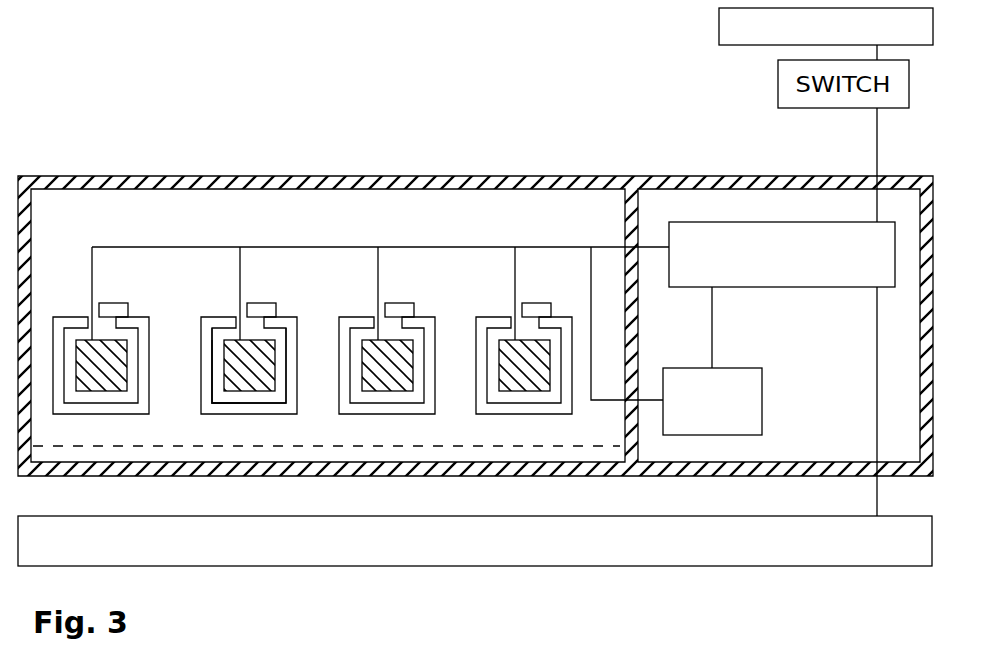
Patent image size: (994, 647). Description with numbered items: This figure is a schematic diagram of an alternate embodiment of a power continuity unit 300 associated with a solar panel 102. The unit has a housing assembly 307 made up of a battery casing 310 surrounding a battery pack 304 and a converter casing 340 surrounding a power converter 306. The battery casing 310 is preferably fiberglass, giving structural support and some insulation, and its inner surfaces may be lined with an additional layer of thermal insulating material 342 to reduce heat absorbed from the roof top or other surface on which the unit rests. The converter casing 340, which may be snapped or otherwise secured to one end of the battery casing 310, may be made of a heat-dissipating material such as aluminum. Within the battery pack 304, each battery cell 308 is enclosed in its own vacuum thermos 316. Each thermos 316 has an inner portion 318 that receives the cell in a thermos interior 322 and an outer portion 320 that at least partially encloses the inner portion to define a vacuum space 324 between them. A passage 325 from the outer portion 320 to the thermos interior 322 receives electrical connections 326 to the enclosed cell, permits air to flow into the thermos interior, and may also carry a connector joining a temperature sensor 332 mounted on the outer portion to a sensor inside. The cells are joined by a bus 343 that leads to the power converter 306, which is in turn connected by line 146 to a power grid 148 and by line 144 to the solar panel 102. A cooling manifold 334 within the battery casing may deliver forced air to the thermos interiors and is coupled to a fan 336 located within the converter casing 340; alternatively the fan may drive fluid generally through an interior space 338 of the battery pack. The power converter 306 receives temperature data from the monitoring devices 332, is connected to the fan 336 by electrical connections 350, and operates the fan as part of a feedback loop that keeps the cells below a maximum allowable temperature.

The solar panel 102 is at (622, 538).
The electrical connection to alternative energy device 144 is at (879, 497).
The electrical connection to power grid 146 is at (876, 145).
The power grid 148 is at (730, 34).
The power continuity unit 300 is at (364, 107).
The battery pack 304 is at (157, 220).
The power converter 306 is at (822, 273).
The housing assembly 307 is at (678, 142).
The battery cell 308 is at (115, 362).
The battery casing 310 is at (227, 181).
The vacuum thermos 316 is at (54, 385).
The inner portion 318 is at (434, 392).
The outer portion 320 is at (317, 349).
The thermos interior 322 is at (218, 398).
The vacuum space 324 is at (291, 375).
The passage 325 is at (377, 318).
The electrical connections 326 is at (100, 333).
The temperature sensor 332 is at (398, 303).
The cooling manifold 334 is at (590, 307).
The fan 336 is at (749, 405).
The interior space 338 is at (483, 222).
The converter casing 340 is at (718, 176).
The thermal insulating material 342 is at (484, 447).
The bus line 343 is at (550, 246).
The electrical connections 350 is at (713, 335).